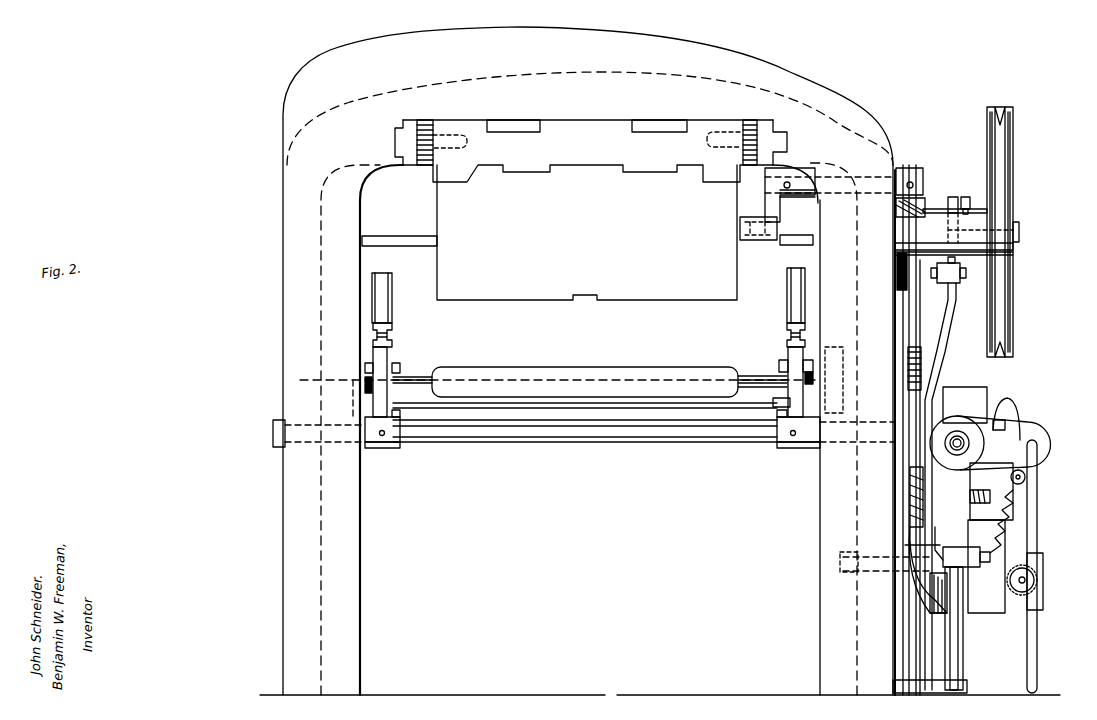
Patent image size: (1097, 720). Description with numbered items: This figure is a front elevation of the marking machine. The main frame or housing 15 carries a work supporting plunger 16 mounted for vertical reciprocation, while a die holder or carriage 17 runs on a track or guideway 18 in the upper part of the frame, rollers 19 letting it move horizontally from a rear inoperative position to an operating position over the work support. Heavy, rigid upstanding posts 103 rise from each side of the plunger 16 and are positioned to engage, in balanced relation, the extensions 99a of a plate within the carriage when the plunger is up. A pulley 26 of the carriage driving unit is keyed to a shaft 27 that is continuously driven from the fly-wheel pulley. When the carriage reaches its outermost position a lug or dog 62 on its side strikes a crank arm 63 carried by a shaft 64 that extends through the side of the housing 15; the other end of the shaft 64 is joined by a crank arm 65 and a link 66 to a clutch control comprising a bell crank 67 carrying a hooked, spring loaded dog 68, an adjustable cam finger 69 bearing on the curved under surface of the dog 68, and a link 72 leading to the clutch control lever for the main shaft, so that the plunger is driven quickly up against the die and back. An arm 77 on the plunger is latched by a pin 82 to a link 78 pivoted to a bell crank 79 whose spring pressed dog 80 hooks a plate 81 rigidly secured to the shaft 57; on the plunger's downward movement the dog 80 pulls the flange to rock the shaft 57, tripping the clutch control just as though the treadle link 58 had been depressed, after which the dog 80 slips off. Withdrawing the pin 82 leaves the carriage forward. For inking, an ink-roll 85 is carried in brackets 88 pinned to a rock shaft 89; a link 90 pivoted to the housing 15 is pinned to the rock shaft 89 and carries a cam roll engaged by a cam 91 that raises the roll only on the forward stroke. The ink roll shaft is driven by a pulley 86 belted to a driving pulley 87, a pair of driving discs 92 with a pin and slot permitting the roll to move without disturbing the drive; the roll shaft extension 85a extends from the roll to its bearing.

The main frame or housing 15 is at (716, 50).
The work supporting plunger 16 is at (550, 368).
The die holder or carriage 17 is at (420, 278).
The track or guideway 18 is at (408, 125).
The rollers 19 is at (425, 125).
The pulley 26 is at (1002, 162).
The shaft 27 is at (1019, 236).
The shaft 57 is at (960, 440).
The treadle link 58 is at (1037, 620).
The lug or dog 62 is at (782, 238).
The crank arm 63 is at (770, 204).
The shaft 64 is at (893, 160).
The crank arm 65 is at (923, 176).
The link 66 is at (915, 335).
The bell crank 67 is at (910, 590).
The dog 68 is at (910, 495).
The adjustable cam finger 69 is at (905, 540).
The link 72 is at (963, 646).
The arm 77 is at (990, 600).
The link 78 is at (1013, 530).
The bell crank 79 is at (1013, 480).
The spring pressed dog 80 is at (1030, 426).
The plate or flange 81 is at (1008, 410).
The pin 82 is at (1037, 580).
The ink-roll 85 is at (680, 367).
The shaft extension 85a is at (758, 378).
The pulley 86 is at (932, 362).
The driving pulley 87 is at (908, 168).
The brackets 88 is at (400, 435).
The rock shaft 89 is at (610, 442).
The link 90 is at (950, 310).
The cam 91 is at (950, 197).
The driving discs 92 is at (835, 347).
The extensions 99a is at (396, 240).
The upstanding posts 103 is at (392, 343).